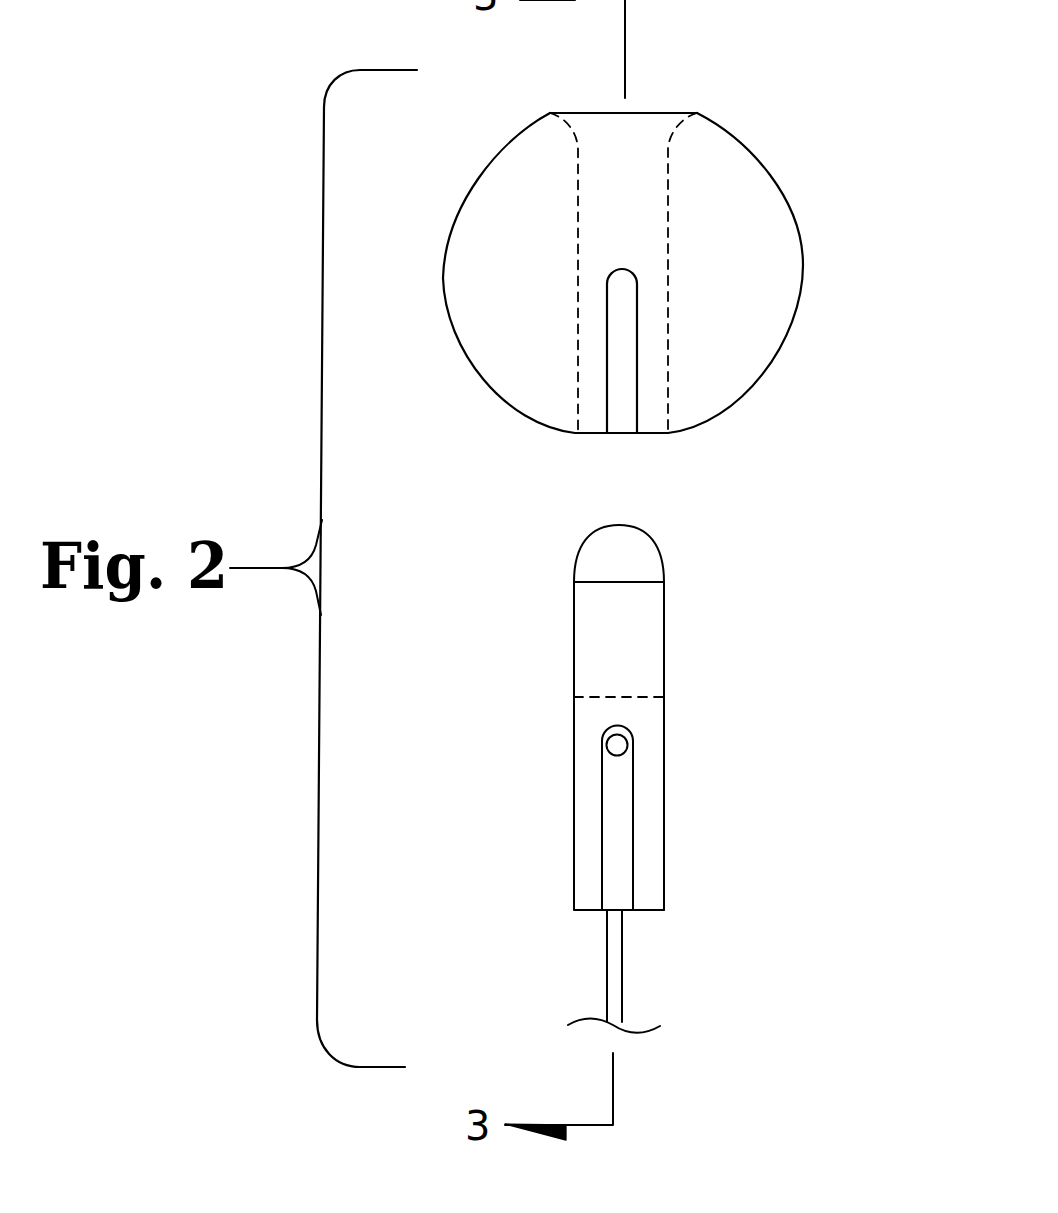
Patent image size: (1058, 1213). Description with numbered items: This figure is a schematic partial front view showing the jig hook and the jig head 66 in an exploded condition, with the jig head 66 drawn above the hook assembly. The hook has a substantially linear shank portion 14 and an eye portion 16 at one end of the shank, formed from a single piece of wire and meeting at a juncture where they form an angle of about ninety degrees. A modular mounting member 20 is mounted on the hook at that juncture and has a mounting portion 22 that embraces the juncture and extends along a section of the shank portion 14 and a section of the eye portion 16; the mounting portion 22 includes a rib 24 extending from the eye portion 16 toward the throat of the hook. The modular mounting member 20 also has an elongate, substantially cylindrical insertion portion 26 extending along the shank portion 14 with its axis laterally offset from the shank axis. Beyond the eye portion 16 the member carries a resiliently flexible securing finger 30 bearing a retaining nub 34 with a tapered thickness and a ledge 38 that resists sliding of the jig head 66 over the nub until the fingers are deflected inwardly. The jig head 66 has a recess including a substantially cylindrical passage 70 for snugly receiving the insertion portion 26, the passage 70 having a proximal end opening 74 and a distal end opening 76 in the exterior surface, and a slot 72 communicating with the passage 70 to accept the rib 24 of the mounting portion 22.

The shank portion 14 is at (613, 993).
The eye portion 16 is at (607, 745).
The modular mounting member 20 is at (664, 805).
The mounting portion 22 is at (633, 770).
The rib 24 is at (613, 862).
The insertion portion 26 is at (664, 855).
The securing finger 30 is at (635, 636).
The retaining nub 34 is at (597, 553).
The ledge 38 is at (593, 583).
The jig head 66 is at (762, 278).
The passage 70 is at (668, 190).
The slot 72 is at (637, 372).
The proximal end opening 74 is at (620, 436).
The distal end opening 76 is at (653, 113).